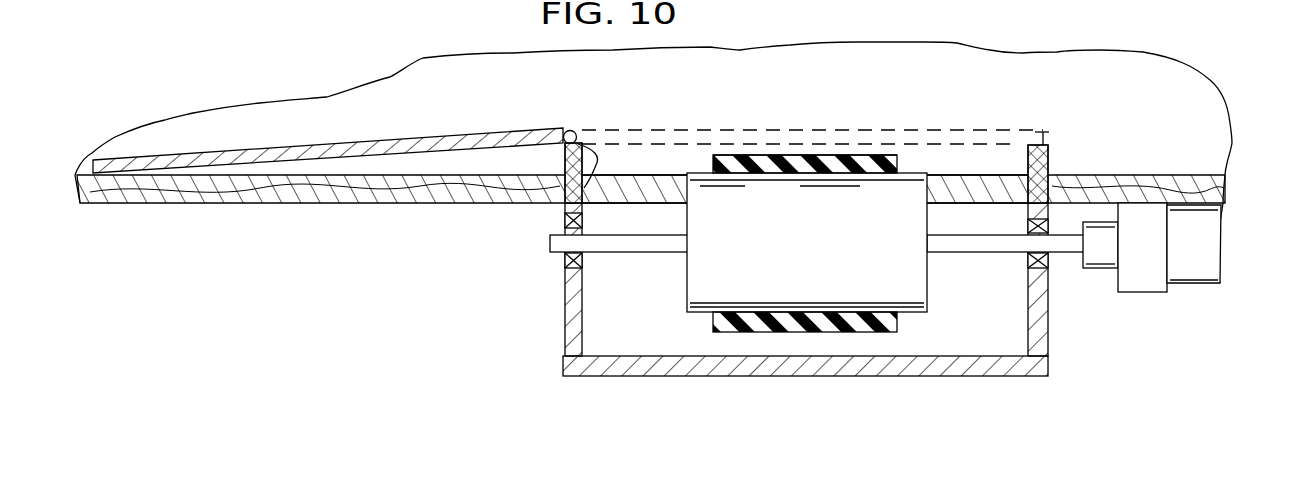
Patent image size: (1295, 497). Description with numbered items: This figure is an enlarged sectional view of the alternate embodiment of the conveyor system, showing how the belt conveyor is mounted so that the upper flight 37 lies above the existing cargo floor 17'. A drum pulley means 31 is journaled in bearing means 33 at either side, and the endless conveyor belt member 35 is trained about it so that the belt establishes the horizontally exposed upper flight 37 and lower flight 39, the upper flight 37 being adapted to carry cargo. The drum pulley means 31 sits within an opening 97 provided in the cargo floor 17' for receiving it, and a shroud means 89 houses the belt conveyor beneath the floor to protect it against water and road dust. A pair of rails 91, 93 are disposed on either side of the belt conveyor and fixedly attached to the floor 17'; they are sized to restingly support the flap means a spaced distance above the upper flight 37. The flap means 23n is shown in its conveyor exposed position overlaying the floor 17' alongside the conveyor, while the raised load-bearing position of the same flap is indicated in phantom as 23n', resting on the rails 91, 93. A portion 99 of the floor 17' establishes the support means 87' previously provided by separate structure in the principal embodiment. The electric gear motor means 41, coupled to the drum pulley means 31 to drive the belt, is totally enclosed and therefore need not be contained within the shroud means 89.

The cargo floor 17' is at (653, 162).
The flap means 23n is at (328, 123).
The flap means in load-bearing position 23n' is at (812, 107).
The support means 87' is at (805, 148).
The shroud means 89 is at (995, 378).
The rail 91 is at (576, 130).
The opening 97 is at (596, 150).
The rail 93 is at (1040, 160).
The portion of floor 99 is at (970, 188).
The bearing means 33 is at (565, 257).
The drum pulley means 31 is at (790, 257).
The endless conveyor belt member 35 is at (783, 152).
The lower flight 39 is at (820, 334).
The upper flight 37 is at (862, 152).
The gear motor means 41 is at (1198, 260).